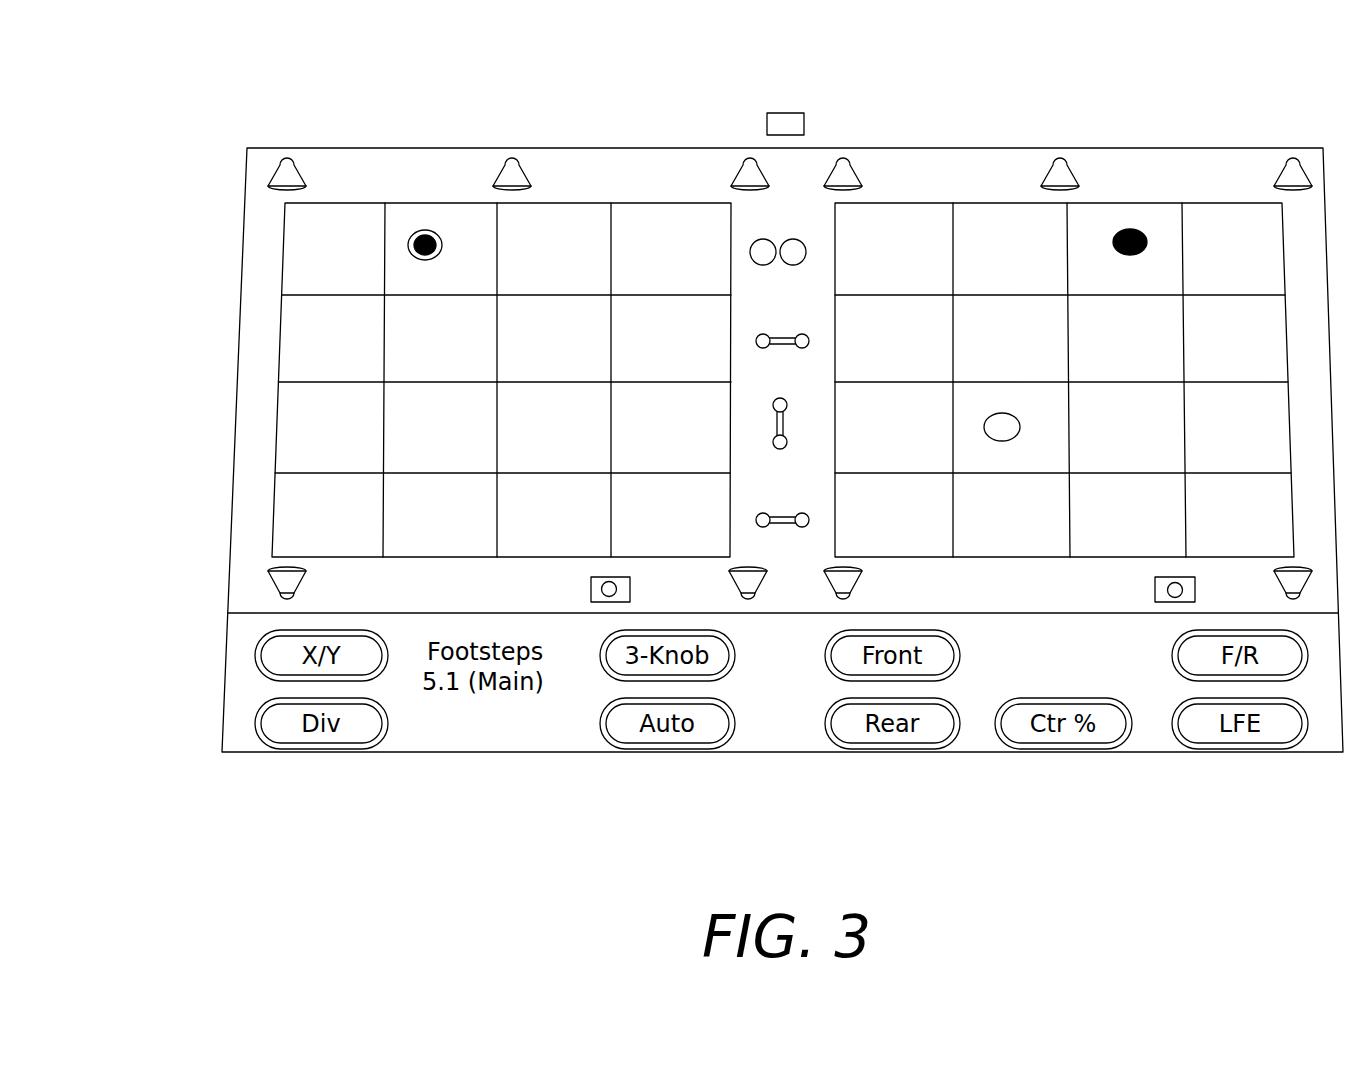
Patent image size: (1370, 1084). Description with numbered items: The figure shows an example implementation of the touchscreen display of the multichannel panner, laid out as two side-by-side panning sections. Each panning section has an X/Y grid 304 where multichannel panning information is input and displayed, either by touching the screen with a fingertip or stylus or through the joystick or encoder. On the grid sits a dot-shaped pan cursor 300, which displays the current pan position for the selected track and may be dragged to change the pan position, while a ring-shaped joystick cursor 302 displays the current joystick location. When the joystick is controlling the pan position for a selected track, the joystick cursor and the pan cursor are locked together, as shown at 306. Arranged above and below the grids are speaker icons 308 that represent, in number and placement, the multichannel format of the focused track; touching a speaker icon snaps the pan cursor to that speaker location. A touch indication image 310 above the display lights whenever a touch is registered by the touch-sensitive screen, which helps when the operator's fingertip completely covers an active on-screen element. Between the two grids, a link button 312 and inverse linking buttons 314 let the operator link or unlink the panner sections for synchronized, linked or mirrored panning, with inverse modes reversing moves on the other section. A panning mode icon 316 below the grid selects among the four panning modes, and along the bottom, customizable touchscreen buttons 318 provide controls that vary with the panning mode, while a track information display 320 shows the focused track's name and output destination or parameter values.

The pan cursor 300 is at (1135, 228).
The joystick cursor 302 is at (1012, 412).
The X/Y grid 304 is at (262, 203).
The locked joystick cursor and pan cursor 306 is at (427, 228).
The speaker icon 308 is at (273, 180).
The touch indication image 310 is at (803, 113).
The link button 312 is at (808, 257).
The inverse linking buttons 314 is at (817, 520).
The panning mode icon 316 is at (591, 578).
The touchscreen buttons 318 is at (715, 775).
The track information display 320 is at (1133, 685).